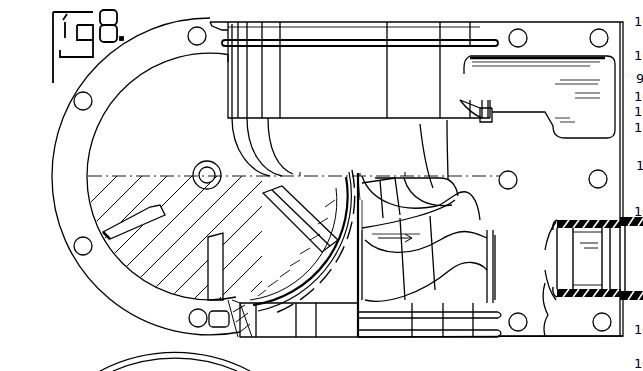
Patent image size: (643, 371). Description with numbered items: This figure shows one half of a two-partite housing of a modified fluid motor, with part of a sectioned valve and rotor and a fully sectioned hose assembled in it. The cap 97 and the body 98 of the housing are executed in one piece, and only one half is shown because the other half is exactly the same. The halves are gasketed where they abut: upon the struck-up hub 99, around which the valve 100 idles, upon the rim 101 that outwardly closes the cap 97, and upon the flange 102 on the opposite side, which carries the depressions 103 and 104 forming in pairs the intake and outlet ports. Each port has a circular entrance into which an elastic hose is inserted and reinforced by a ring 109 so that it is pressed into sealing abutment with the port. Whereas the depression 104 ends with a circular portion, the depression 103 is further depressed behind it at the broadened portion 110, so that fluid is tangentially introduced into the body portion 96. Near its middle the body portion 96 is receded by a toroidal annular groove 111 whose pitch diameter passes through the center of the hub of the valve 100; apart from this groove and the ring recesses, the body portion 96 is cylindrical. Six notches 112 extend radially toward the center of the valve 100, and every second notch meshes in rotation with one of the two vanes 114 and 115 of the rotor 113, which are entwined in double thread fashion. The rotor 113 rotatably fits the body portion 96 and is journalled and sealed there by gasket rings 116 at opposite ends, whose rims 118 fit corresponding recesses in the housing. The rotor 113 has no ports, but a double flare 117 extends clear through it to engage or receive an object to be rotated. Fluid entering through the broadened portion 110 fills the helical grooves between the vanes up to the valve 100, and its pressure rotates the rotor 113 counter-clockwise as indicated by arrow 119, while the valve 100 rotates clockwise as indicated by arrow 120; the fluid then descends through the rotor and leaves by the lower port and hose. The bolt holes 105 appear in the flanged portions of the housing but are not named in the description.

The body portion 96 is at (354, 70).
The cap 97 is at (135, 101).
The body 98 is at (150, 36).
The struck-up hub 99 is at (207, 161).
The valve 100 is at (184, 237).
The rim 101 is at (131, 97).
The flange 102 is at (416, 179).
The depression 103 is at (594, 85).
The depression 104 is at (546, 338).
The bolt holes 105 is at (78, 250).
The ring 109 is at (594, 302).
The broadened portion 110 is at (537, 97).
The toroidal annular groove 111 is at (357, 144).
The notches 112 is at (112, 228).
The rotor 113 is at (304, 242).
The vane 114 is at (306, 192).
The vane 115 is at (450, 200).
The gasket rings 116 is at (428, 322).
The double flare 117 is at (348, 255).
The rims 118 is at (458, 326).
The arrow 119 is at (396, 249).
The arrow 120 is at (162, 251).